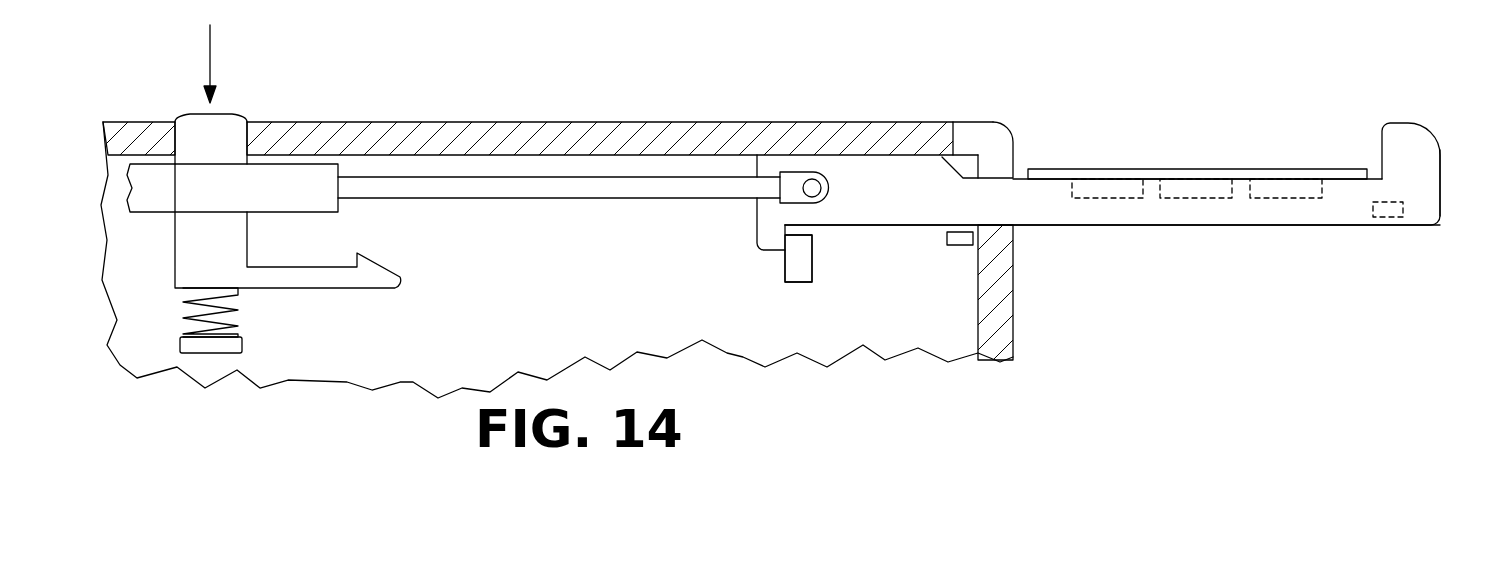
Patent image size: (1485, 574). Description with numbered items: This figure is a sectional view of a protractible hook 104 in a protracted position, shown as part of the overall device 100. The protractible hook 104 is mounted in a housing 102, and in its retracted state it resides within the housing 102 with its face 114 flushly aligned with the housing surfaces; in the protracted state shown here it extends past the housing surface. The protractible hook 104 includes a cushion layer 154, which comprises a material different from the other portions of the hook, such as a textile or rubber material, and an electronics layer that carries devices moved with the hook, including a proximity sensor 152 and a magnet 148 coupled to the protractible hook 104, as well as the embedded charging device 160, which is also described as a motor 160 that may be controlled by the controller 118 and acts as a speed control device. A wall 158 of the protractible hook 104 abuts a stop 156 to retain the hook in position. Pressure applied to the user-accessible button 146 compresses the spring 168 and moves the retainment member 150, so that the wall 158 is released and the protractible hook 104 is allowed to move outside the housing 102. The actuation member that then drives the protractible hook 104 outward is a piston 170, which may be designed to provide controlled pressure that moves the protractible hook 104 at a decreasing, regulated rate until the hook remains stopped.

The input device 100 is at (782, 70).
The housing 102 is at (453, 122).
The protractible hook 104 is at (1302, 148).
The face 114 is at (1440, 160).
The controller 118 is at (960, 246).
The user-accessible button 146 is at (195, 115).
The magnet 148 is at (1110, 199).
The retainment member 150 is at (345, 290).
The proximity sensor 152 is at (1390, 218).
The cushion layer 154 is at (1199, 168).
The stop 156 is at (797, 283).
The wall 158 is at (812, 245).
The motor 160 is at (1197, 199).
The spring 168 is at (238, 310).
The piston 170 is at (320, 212).